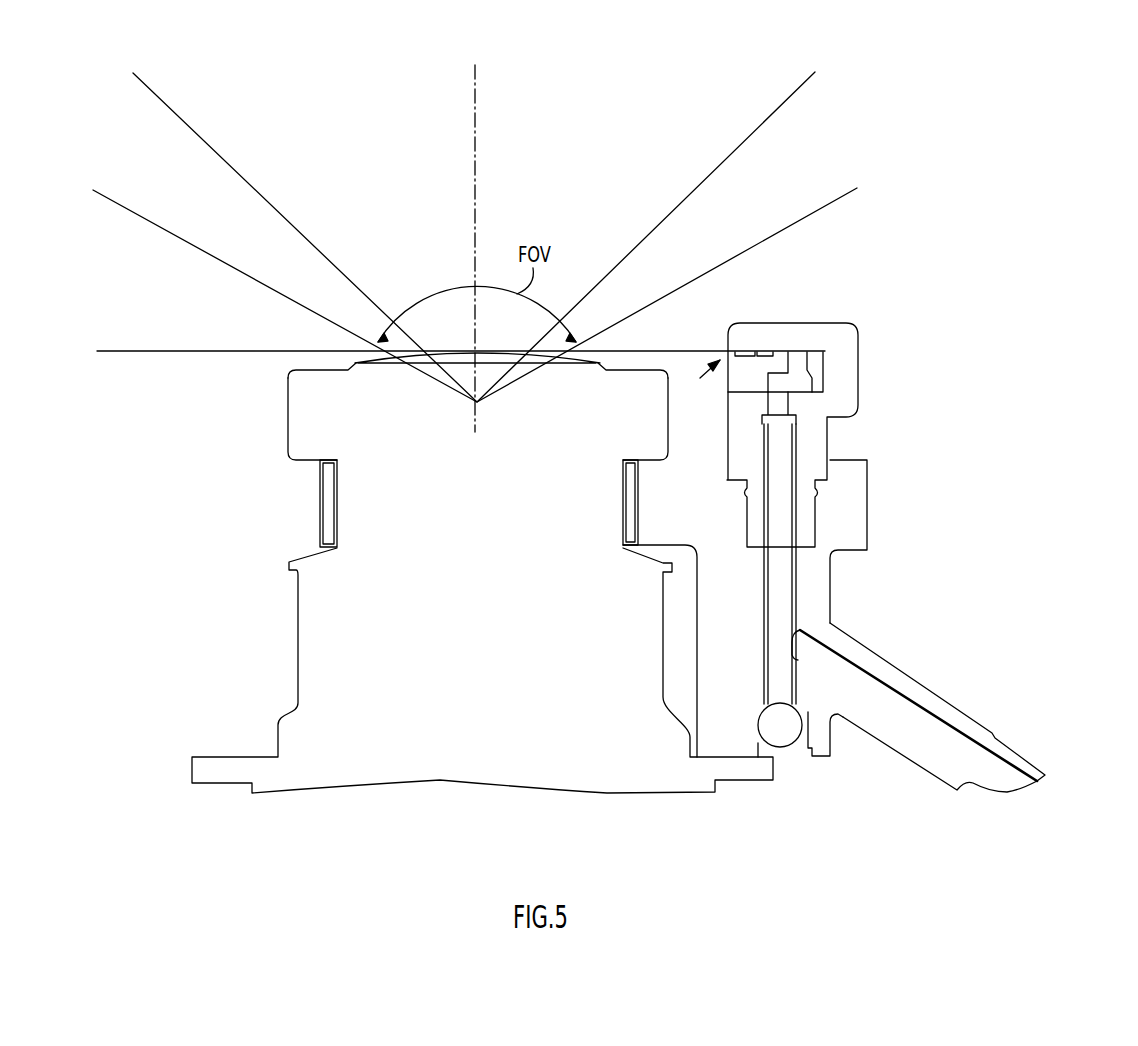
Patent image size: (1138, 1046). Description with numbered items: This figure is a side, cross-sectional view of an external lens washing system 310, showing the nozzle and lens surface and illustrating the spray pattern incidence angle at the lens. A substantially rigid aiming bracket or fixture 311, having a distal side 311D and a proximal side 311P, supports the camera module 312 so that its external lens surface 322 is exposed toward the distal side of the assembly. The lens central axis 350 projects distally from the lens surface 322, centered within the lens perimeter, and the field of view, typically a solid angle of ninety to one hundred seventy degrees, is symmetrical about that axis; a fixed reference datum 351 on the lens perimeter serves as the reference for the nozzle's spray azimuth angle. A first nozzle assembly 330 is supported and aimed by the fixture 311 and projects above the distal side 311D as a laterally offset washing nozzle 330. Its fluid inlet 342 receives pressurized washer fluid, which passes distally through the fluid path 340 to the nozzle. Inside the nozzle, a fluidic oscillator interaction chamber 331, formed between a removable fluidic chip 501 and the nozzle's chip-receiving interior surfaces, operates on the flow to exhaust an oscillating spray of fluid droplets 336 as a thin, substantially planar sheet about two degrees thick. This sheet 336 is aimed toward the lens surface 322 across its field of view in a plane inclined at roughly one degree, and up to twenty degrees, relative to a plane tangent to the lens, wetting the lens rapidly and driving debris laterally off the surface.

The lens central axis 350 is at (475, 83).
The external lens washing system 310 is at (428, 295).
The planar sheet of fluid droplets 336 is at (645, 343).
The external lens surface 322 is at (375, 356).
The camera module 312 is at (292, 414).
The datum on the lens perimeter 351 is at (667, 368).
The aiming bracket or fixture 311 is at (319, 498).
The proximal side of the fixture 311P is at (663, 556).
The distal side of the fixture 311D is at (845, 460).
The nozzle assembly / laterally offset washing nozzle 330 is at (762, 323).
The fluidic oscillator interaction chamber 331 is at (775, 352).
The removable fluidic chip 501 is at (700, 378).
The fluid path 340 is at (782, 596).
The fluid inlet 342 is at (948, 712).